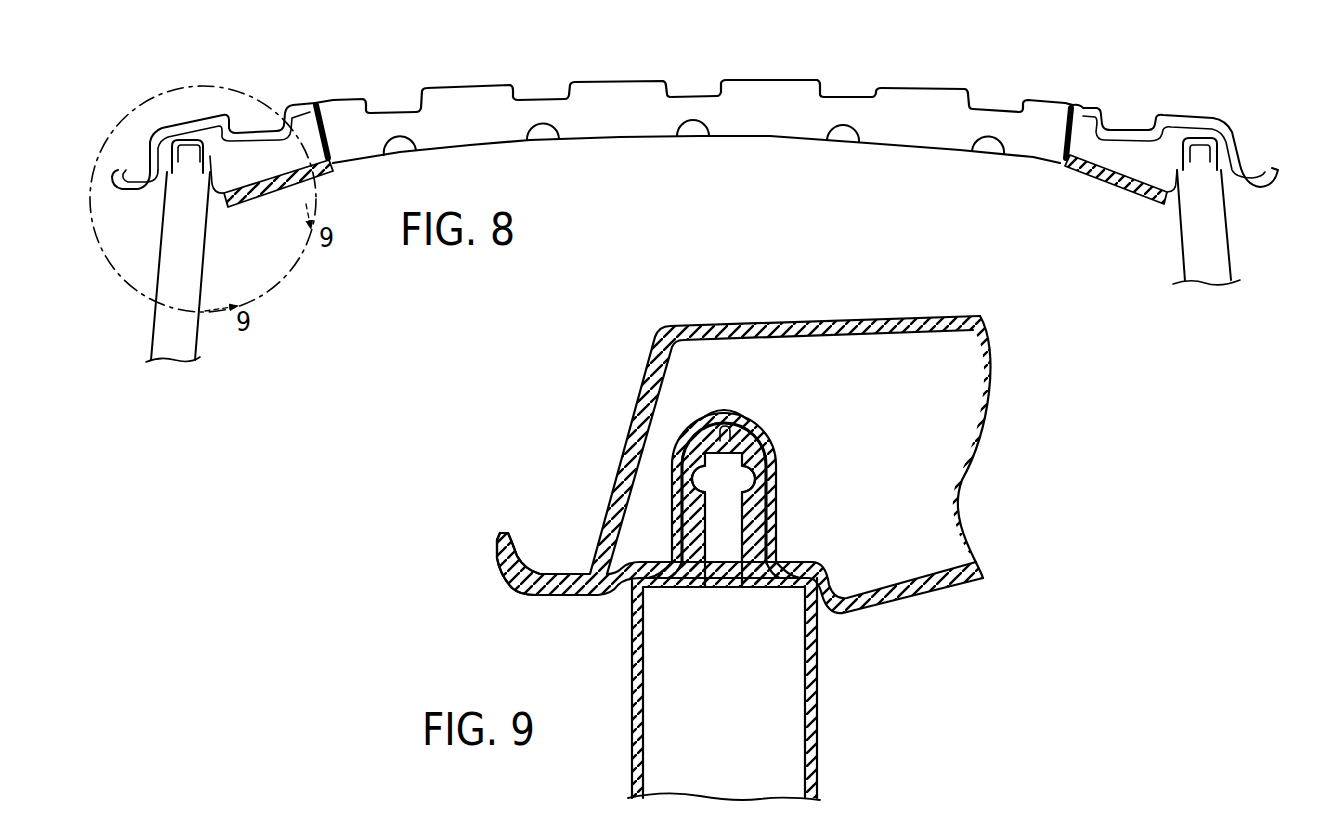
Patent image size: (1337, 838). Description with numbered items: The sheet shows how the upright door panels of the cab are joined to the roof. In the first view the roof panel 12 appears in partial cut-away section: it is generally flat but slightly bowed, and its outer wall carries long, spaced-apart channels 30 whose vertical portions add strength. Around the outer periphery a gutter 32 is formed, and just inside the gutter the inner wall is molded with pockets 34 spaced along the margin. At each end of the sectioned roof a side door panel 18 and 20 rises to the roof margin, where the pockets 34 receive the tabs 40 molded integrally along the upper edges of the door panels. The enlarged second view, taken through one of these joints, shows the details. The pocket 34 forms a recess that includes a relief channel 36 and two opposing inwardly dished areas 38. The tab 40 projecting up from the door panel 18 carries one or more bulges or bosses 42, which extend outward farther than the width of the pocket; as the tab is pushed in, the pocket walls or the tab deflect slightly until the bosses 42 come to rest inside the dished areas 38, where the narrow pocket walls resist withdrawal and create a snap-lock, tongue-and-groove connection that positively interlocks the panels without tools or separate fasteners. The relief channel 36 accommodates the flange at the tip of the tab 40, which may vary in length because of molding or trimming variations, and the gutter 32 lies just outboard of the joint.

In FIG. 8, the roof panel 12 is at (777, 76).
In FIG. 9, the roof panel 12 is at (812, 318).
In FIG. 8, the side door panel 18 is at (148, 339).
In FIG. 9, the side door panel 18 is at (626, 752).
In FIG. 8, the side door panel 20 is at (1230, 241).
In FIG. 8, the channels 30 is at (538, 98).
In FIG. 8, the gutter 32 is at (139, 176).
In FIG. 9, the gutter 32 is at (540, 566).
In FIG. 8, the pockets 34 is at (197, 155).
In FIG. 9, the pockets 34 is at (784, 522).
In FIG. 9, the relief channel 36 is at (736, 416).
In FIG. 9, the dished areas 38 is at (684, 478).
In FIG. 9, the tabs 40 is at (713, 541).
In FIG. 9, the bosses 42 is at (773, 480).